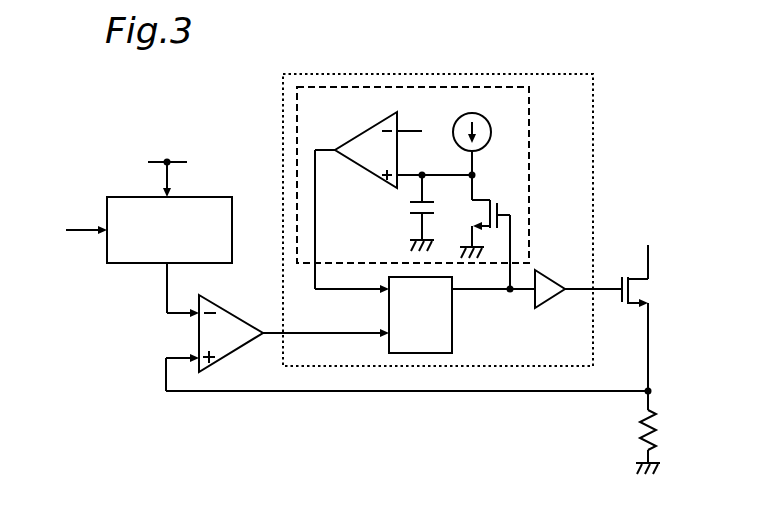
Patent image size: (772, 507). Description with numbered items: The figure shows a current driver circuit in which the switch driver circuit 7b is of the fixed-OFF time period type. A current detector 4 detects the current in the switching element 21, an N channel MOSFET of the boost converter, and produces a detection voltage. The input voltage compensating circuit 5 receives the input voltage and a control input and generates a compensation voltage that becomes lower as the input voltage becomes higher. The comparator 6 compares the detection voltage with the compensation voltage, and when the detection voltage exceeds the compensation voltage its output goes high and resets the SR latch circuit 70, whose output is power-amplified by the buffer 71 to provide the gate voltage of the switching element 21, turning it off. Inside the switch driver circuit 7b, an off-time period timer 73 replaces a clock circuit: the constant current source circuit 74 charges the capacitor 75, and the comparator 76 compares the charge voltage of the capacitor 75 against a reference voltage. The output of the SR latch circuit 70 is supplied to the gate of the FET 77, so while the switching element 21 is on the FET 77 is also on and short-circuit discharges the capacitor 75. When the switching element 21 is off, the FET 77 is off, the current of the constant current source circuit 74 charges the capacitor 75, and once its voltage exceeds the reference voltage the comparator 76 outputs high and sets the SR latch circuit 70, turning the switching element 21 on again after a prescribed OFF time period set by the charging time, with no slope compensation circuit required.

The current detector 4 is at (642, 423).
The input voltage compensating circuit 5 is at (193, 197).
The comparator 6 is at (247, 308).
The switch driver circuit 7b is at (283, 116).
The switching element 21 is at (622, 276).
The SR latch circuit 70 is at (455, 327).
The buffer 71 is at (558, 262).
The off-time period timer 73 is at (529, 150).
The constant current source circuit 74 is at (457, 118).
The capacitor 75 is at (404, 213).
The comparator 76 is at (353, 168).
The FET 77 is at (482, 200).